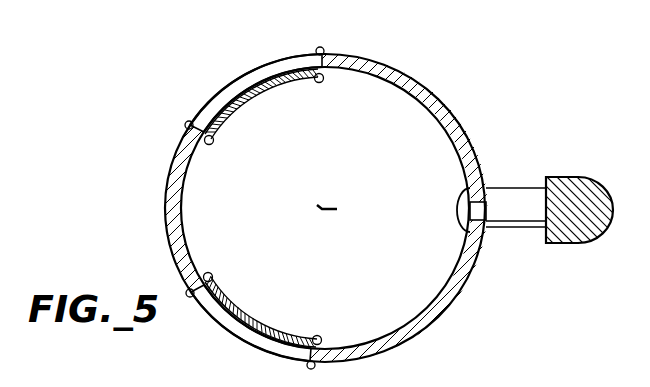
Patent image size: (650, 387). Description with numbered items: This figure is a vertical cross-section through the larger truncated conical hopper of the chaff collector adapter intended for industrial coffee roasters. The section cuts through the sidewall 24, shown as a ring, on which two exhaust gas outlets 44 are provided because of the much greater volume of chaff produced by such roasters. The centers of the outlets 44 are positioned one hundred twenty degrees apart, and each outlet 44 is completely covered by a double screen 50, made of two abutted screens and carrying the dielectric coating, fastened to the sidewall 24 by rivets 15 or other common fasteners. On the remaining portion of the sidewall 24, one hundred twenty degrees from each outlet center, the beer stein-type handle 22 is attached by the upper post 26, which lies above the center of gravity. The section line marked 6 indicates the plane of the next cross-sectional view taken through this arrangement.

The sidewall 24 is at (428, 89).
The exhaust gas outlets 44 is at (276, 64).
The double screens 50 is at (268, 94).
The rivets 15 is at (186, 128).
The upper post 26 is at (502, 205).
The beer stein-type handle 22 is at (563, 230).
The open bottom 6 is at (182, 70).